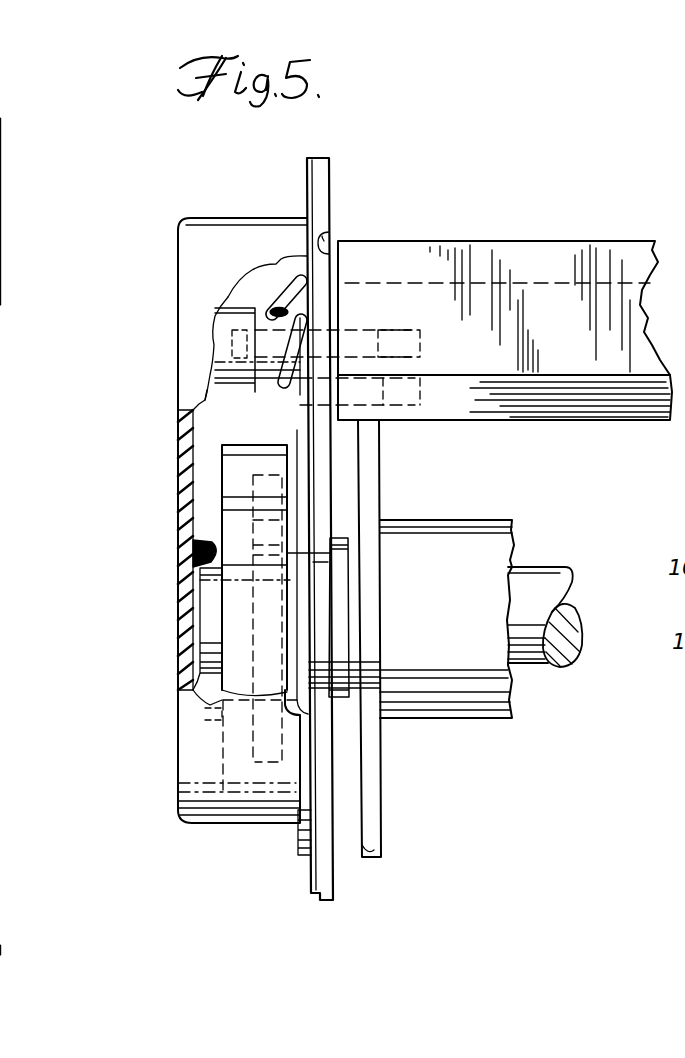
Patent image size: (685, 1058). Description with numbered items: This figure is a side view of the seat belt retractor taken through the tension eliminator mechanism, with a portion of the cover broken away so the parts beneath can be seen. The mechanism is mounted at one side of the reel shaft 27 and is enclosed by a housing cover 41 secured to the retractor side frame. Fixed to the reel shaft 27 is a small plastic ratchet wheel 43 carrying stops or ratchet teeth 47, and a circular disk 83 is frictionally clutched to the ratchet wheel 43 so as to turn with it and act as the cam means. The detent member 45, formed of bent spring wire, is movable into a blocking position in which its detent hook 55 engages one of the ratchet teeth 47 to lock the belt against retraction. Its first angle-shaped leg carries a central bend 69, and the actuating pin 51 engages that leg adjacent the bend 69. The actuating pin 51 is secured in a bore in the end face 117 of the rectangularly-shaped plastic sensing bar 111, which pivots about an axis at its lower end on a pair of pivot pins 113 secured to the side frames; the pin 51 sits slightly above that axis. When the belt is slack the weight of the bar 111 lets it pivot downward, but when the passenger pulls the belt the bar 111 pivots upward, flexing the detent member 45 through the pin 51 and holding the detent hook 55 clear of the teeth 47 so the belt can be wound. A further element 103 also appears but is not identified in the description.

The end face 117 is at (332, 240).
The rectangularly-shaped bar 111 is at (590, 262).
The bend 69 is at (242, 302).
The housing cover 41 is at (178, 312).
The actuating pin 51 is at (384, 326).
The pivot pins 113 is at (440, 368).
The detent member 45 is at (292, 424).
The ratchet teeth 47 is at (185, 445).
The ratchet wheel 43 is at (225, 462).
The circular disk 83 is at (232, 490).
The reel shaft 27 is at (548, 570).
The detent hook 55 is at (213, 715).
The door panel 103 is at (648, 487).